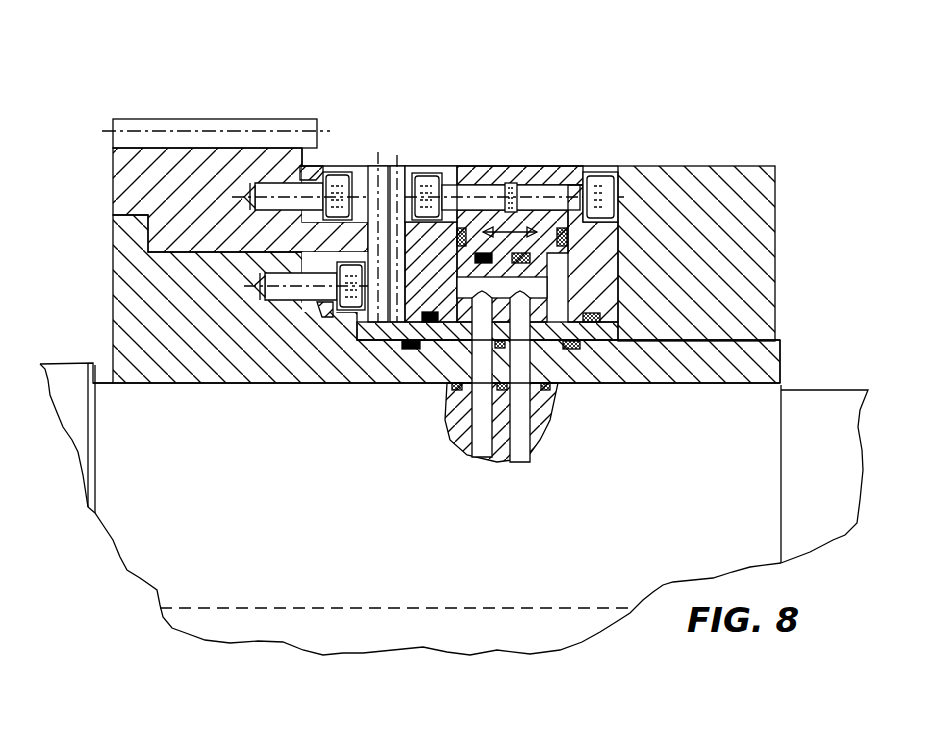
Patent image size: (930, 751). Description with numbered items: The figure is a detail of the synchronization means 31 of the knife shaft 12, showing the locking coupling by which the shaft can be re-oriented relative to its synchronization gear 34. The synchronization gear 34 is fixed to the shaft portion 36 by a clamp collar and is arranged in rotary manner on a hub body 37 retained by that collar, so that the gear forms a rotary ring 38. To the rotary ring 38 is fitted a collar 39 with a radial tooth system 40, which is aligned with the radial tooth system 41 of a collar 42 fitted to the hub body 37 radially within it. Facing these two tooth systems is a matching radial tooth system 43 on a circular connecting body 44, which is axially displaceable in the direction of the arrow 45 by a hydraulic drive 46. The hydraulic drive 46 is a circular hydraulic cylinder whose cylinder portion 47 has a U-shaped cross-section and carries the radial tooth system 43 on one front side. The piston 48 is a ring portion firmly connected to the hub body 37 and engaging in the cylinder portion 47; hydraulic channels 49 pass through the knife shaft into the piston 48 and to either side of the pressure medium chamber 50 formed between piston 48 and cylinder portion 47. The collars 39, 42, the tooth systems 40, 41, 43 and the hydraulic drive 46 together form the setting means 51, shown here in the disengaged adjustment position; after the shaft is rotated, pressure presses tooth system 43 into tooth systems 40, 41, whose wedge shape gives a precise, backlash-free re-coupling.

The knife shaft 12 is at (796, 376).
The synchronization means 31 is at (276, 75).
The synchronization gear 34 is at (138, 125).
The shaft portion 36 is at (325, 500).
The hub body 37 is at (178, 355).
The rotary ring 38 is at (122, 182).
The collar 39 is at (322, 166).
The radial tooth system 40 is at (380, 166).
The radial tooth system 41 is at (376, 312).
The collar 42 is at (322, 312).
The radial tooth system 43 is at (403, 166).
The connecting body 44 is at (417, 318).
The arrow 45 is at (501, 185).
The hydraulic drive 46 is at (533, 138).
The cylinder portion 47 is at (560, 166).
The piston 48 is at (538, 318).
The hydraulic channels 49 is at (482, 437).
The pressure medium chamber 50 is at (558, 268).
The setting means 51 is at (491, 113).